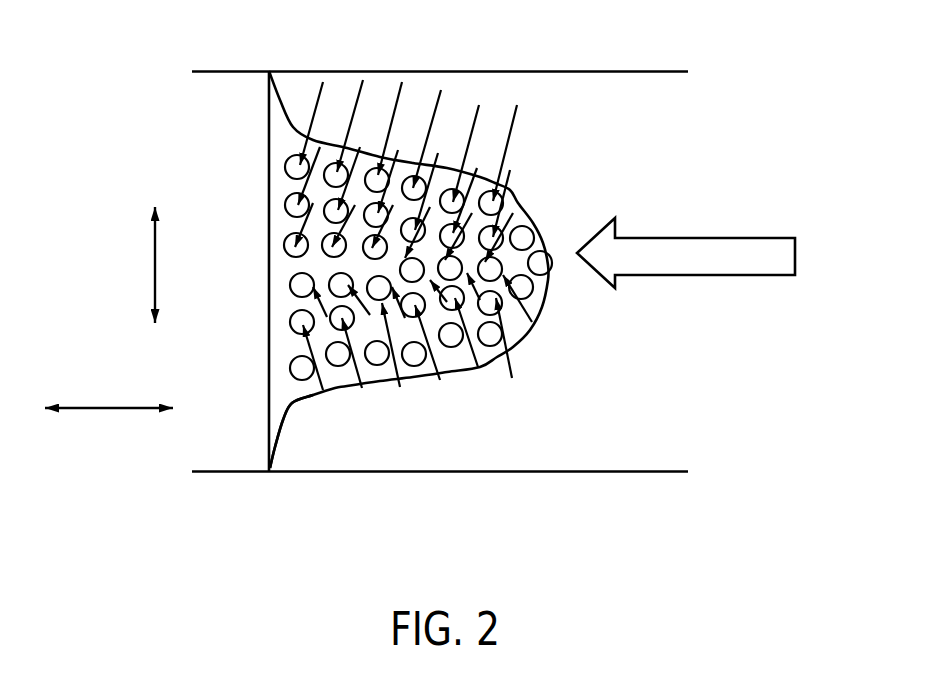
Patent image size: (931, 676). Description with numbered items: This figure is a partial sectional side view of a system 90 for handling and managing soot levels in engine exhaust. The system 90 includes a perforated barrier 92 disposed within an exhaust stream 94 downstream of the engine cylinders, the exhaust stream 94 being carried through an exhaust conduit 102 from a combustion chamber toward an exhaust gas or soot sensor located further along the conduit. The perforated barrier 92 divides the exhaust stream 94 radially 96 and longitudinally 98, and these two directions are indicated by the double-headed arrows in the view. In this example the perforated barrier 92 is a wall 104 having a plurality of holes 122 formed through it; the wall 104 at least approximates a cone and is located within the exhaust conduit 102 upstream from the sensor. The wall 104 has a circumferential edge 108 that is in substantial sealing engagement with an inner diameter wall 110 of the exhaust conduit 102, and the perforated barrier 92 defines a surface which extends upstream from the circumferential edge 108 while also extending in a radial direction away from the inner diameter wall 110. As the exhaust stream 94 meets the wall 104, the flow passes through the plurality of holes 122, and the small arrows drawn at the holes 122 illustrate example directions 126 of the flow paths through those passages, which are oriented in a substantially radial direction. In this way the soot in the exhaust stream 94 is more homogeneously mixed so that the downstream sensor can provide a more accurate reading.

The system 90 is at (752, 71).
The perforated barrier 92 is at (527, 205).
The exhaust stream 94 is at (728, 238).
The radial direction 96 is at (153, 278).
The longitudinal direction 98 is at (115, 410).
The exhaust conduit 102 is at (545, 72).
The wall 104 is at (297, 402).
The circumferential edge 108 is at (270, 70).
The inner diameter wall 110 is at (400, 72).
The holes 122 is at (552, 267).
The directions 126 is at (517, 113).